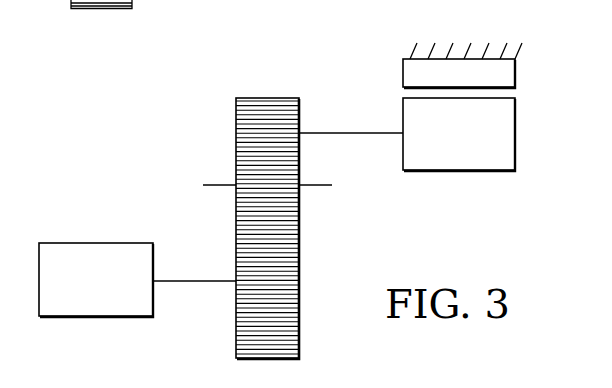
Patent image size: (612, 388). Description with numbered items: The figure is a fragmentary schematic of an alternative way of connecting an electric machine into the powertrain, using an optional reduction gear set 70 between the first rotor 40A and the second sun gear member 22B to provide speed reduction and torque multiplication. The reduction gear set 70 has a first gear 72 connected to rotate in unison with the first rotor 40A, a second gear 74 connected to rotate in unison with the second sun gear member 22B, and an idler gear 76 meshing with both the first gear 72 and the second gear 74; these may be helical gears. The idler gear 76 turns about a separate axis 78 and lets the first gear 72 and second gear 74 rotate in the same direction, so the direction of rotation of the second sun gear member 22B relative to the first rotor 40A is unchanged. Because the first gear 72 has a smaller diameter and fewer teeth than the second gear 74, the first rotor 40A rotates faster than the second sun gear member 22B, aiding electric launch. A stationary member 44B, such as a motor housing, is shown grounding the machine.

The reduction gear set 70 is at (249, 219).
The first gear 72 is at (236, 125).
The second gear 74 is at (299, 243).
The idler gear 76 is at (299, 191).
The separate axis 78 is at (218, 186).
The stationary member 44B is at (410, 52).
The first rotor 40A is at (480, 146).
The second sun gear member 22B is at (116, 291).